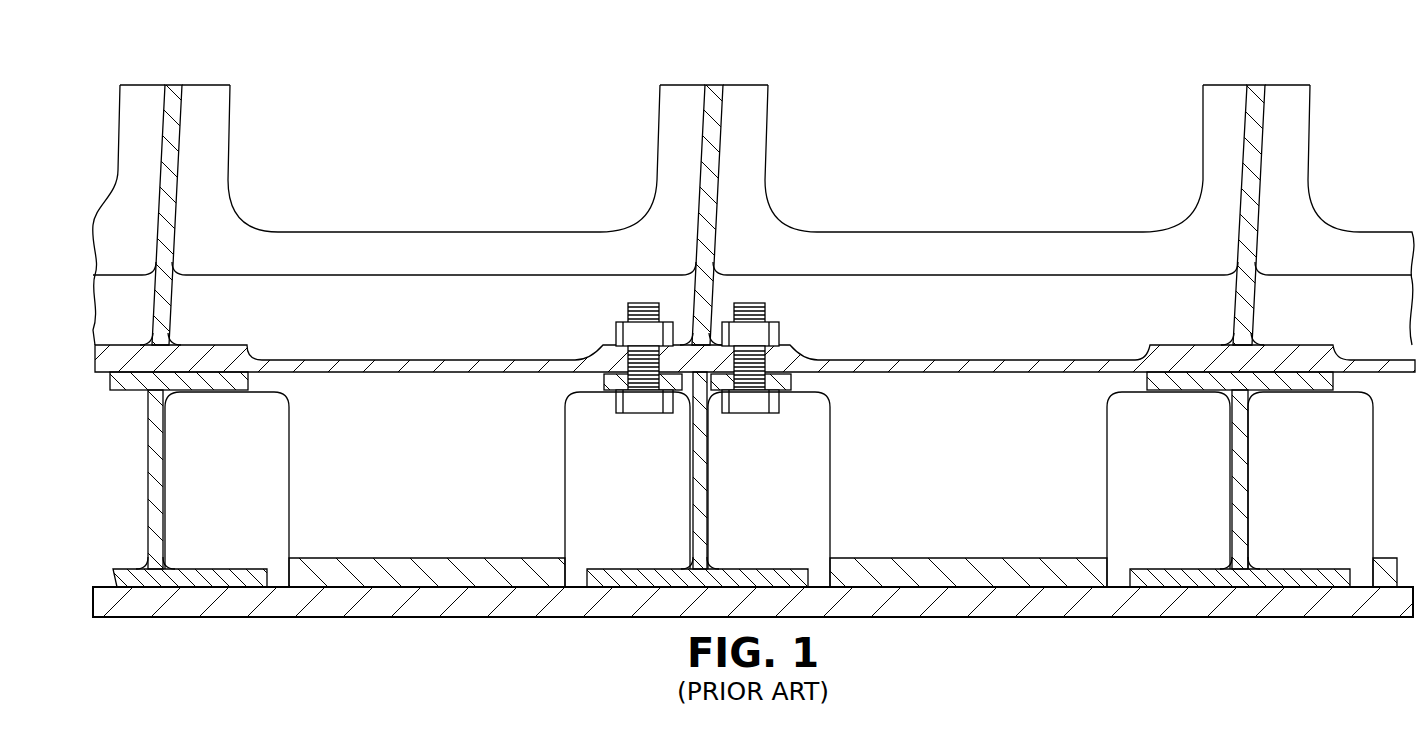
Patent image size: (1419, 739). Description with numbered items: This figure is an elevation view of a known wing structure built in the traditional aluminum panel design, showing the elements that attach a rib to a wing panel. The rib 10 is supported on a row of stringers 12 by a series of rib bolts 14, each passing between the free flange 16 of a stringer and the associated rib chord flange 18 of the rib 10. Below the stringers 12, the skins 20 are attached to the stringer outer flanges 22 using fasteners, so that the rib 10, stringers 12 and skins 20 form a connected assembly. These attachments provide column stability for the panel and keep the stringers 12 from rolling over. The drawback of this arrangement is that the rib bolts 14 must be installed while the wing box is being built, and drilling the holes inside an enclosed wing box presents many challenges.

The rib 10 is at (452, 335).
The stringers 12 is at (147, 486).
The rib bolts 14 is at (657, 413).
The free flange 16 is at (130, 392).
The rib chord flange 18 is at (215, 343).
The skins 20 is at (447, 618).
The stringer outer flanges 22 is at (213, 567).